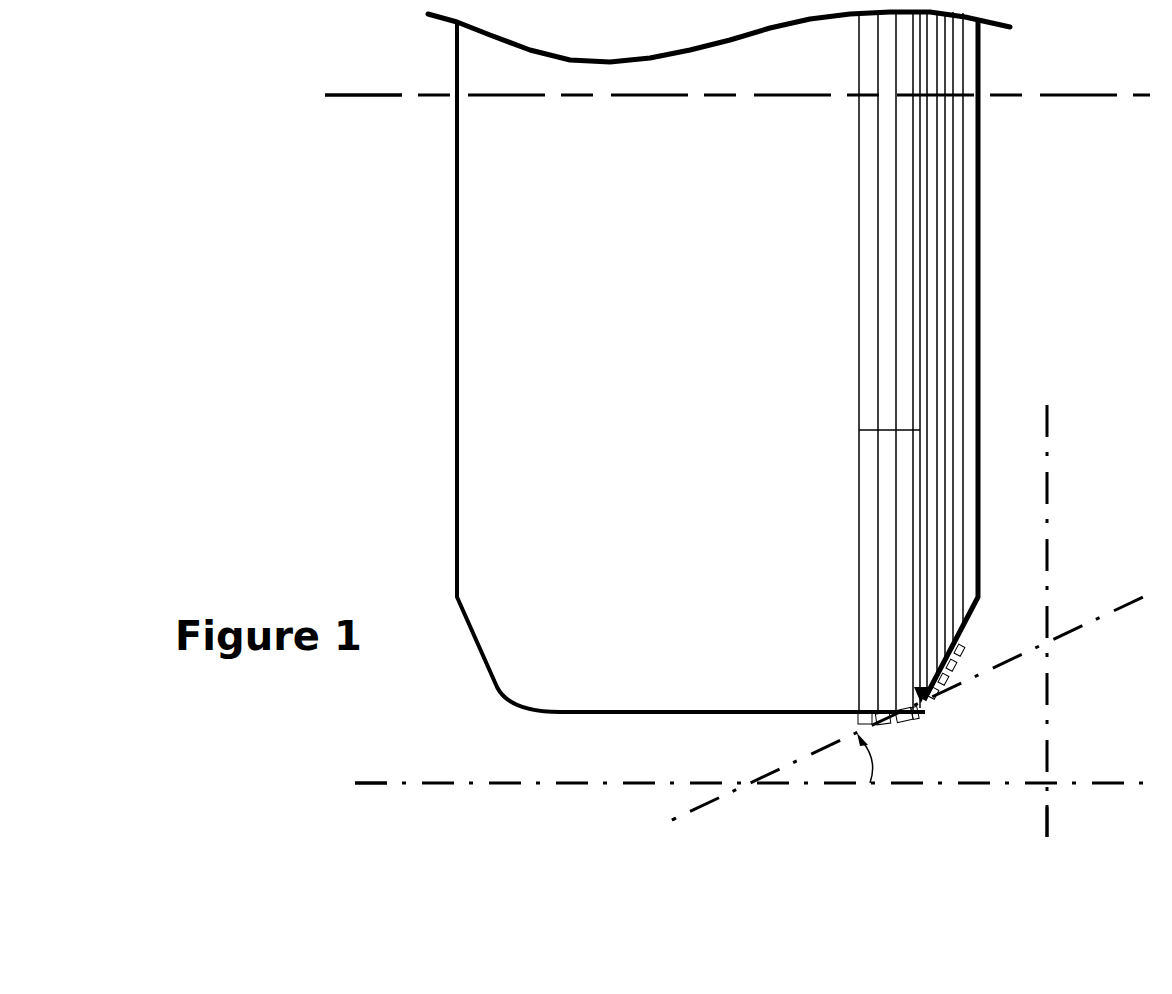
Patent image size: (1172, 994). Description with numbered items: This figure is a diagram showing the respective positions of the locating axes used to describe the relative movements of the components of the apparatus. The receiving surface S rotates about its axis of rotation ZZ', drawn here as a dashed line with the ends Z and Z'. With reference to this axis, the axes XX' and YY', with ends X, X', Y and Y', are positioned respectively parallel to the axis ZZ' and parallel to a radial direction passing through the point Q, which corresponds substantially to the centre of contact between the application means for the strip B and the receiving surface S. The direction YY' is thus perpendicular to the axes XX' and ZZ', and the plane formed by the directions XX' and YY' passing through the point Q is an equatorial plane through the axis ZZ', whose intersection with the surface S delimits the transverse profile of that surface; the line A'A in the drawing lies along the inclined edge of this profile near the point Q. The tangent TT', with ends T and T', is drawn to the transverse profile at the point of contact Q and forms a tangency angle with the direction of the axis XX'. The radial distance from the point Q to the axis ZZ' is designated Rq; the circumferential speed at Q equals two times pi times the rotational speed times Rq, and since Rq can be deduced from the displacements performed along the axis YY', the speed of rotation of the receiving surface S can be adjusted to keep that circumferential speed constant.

The receiving surface S is at (668, 708).
The inclined edge / section line A'A is at (933, 373).
The strip B is at (871, 712).
The radial distance Rq is at (859, 430).
The point of contact Q is at (928, 710).
The axis of rotation Z is at (737, 83).
The axis of rotation Z' is at (363, 83).
The axis XX' X is at (751, 768).
The axis XX' X' is at (371, 767).
The axis YY' Y is at (1060, 612).
The axis YY' Y' is at (1063, 821).
The tangent TT' T is at (907, 708).
The tangent TT' T' is at (691, 828).